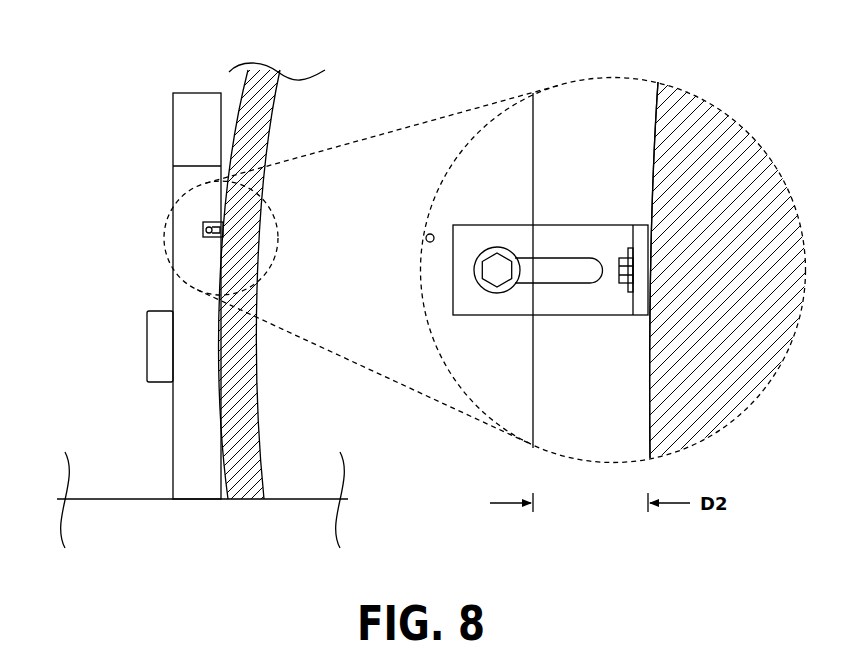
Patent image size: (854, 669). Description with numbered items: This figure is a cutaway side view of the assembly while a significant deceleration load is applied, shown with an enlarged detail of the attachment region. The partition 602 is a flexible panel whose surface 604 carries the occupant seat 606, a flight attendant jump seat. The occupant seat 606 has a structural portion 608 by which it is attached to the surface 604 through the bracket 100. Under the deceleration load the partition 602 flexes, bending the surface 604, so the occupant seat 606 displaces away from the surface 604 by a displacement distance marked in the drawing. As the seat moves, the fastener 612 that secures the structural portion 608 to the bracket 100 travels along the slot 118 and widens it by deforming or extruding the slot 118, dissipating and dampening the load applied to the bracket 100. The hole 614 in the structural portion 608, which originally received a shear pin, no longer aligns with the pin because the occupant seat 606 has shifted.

The occupant seat 606 is at (186, 92).
The partition 602 is at (293, 78).
The structural portion 608 is at (466, 200).
The bracket 100 is at (592, 212).
The hole 614 is at (425, 239).
The fastener 612 is at (496, 253).
The slot 118 is at (556, 258).
The surface 604 is at (647, 404).